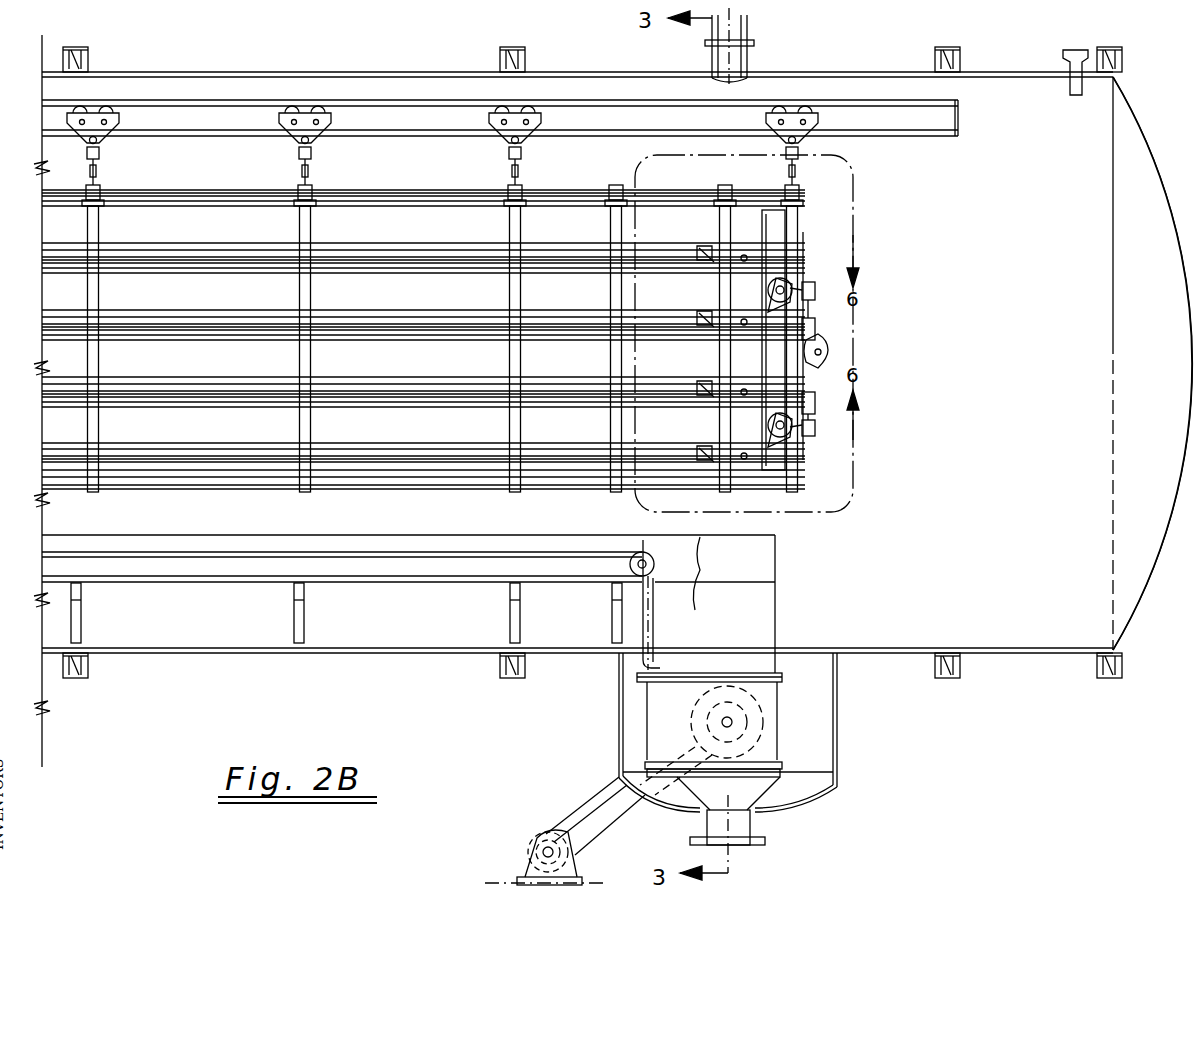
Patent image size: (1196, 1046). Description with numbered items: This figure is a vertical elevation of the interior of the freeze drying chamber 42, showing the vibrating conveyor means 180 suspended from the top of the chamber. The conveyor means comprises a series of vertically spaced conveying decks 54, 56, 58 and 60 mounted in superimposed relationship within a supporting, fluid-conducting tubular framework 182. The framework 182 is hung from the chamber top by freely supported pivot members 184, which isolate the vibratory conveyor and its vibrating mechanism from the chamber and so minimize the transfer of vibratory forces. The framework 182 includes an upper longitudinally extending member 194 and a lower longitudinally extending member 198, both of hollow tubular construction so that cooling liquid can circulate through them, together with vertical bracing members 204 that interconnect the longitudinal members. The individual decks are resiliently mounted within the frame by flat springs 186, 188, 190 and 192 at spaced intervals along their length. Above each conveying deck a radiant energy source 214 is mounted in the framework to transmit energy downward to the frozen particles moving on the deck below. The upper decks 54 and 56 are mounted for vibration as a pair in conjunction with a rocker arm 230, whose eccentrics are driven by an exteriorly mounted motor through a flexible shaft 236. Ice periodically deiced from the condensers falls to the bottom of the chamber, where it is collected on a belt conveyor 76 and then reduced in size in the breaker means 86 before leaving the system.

The freeze drying chamber 42 is at (268, 68).
The conveying deck 54 is at (250, 243).
The conveying deck 56 is at (248, 310).
The conveying deck 58 is at (245, 377).
The conveying deck 60 is at (241, 443).
The belt conveyor 76 is at (498, 548).
The breaker means 86 is at (795, 724).
The vibrating conveyor means 180 is at (840, 352).
The tubular framework 182 is at (255, 492).
The pivot members 184 is at (100, 172).
The flat spring 186 is at (708, 262).
The flat spring 188 is at (710, 316).
The flat spring 190 is at (708, 398).
The flat spring 192 is at (710, 452).
The upper longitudinally extending member 194 is at (460, 190).
The lower longitudinally extending member 198 is at (472, 490).
The vertical bracing member 204 is at (99, 362).
The radiant energy source 214 is at (408, 202).
The rocker arm 230 is at (798, 282).
The flexible shaft 236 is at (826, 350).